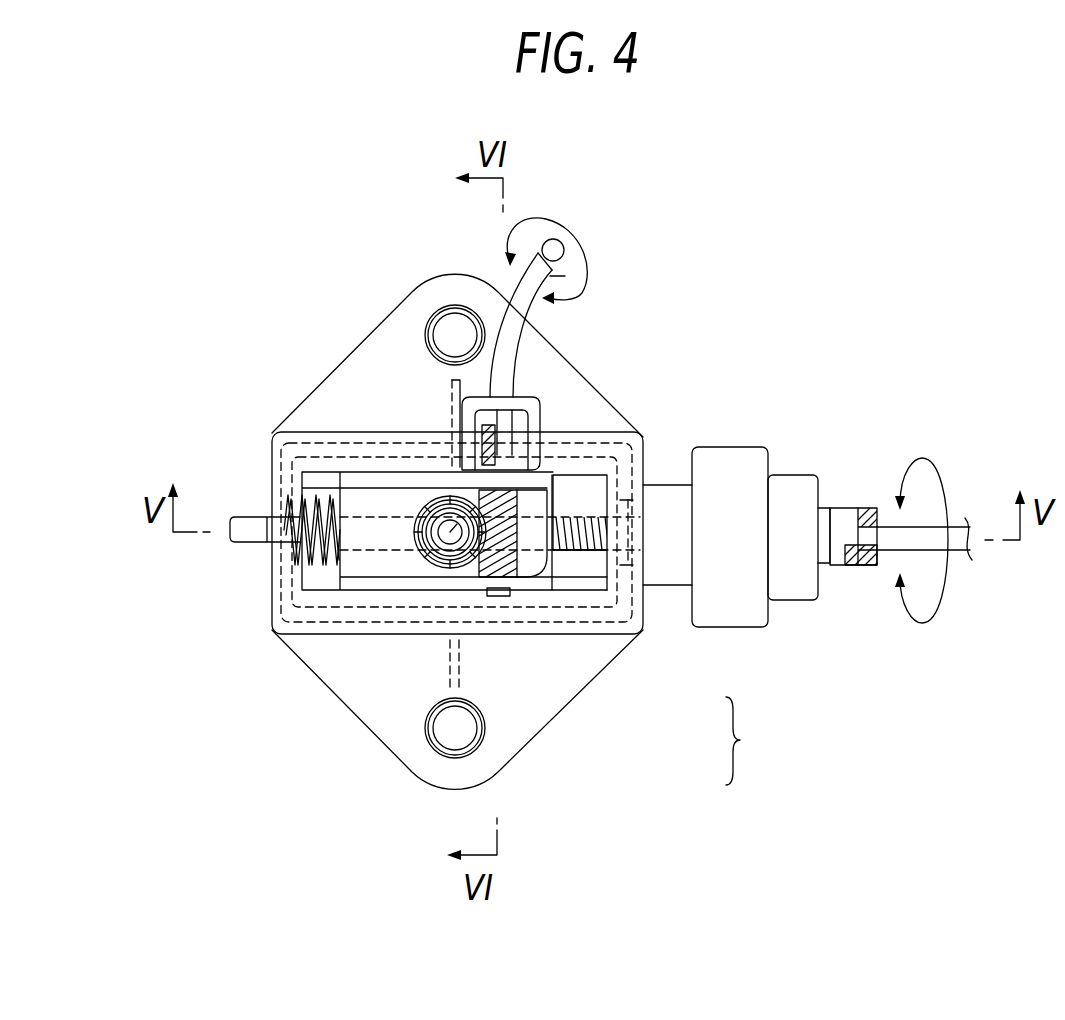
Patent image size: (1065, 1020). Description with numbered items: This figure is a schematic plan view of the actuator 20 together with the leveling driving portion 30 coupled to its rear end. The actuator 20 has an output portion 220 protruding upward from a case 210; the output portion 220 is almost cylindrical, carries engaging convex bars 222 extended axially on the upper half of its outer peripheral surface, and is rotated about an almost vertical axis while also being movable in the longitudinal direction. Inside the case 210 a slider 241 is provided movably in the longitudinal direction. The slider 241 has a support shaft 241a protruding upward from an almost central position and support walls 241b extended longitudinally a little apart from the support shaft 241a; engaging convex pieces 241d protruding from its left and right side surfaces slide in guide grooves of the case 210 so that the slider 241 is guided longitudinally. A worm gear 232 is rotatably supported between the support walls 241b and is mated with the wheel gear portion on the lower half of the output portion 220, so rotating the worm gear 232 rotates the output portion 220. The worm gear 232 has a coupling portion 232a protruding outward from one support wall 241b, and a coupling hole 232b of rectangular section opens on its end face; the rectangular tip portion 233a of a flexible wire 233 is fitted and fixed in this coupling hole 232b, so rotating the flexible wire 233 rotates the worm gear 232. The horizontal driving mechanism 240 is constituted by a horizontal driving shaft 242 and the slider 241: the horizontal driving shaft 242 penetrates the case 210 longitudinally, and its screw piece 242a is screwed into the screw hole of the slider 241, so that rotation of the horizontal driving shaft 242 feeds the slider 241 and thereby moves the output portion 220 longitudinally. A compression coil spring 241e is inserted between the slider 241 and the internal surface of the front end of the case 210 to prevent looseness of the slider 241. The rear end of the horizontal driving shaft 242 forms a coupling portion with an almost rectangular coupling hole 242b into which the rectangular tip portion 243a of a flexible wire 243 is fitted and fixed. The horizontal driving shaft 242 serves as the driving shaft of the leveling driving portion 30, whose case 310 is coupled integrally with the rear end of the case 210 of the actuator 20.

The actuator 20 is at (277, 240).
The leveling driving portion 30 is at (732, 467).
The case 210 is at (627, 440).
The output portion 220 is at (440, 540).
The engaging convex bars 222 is at (462, 420).
The worm gear 232 is at (565, 577).
The coupling portion 232a is at (540, 407).
The coupling hole 232b is at (443, 470).
The flexible wire 233 is at (558, 246).
The tip portion 233a is at (531, 403).
The horizontal driving mechanism 240 is at (759, 741).
The slider 241 is at (528, 575).
The support shaft 241a is at (418, 552).
The support walls 241b is at (422, 507).
The engaging convex pieces 241d is at (437, 445).
The compression coil spring 241e is at (323, 540).
The horizontal driving shaft 242 is at (583, 572).
The screw piece 242a is at (578, 545).
The coupling hole 242b is at (877, 527).
The flexible wire 243 is at (923, 540).
The tip portion 243a is at (853, 570).
The case 310 is at (740, 603).